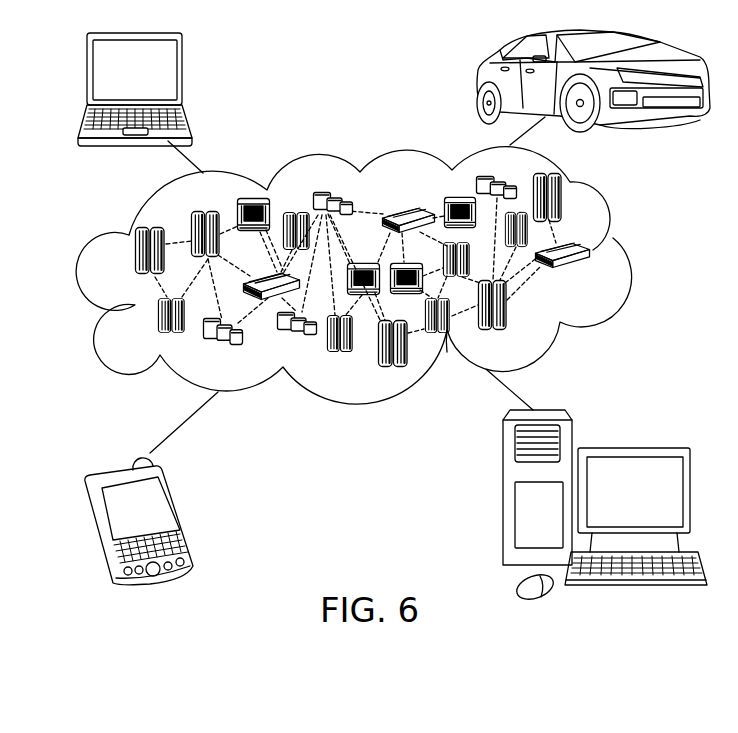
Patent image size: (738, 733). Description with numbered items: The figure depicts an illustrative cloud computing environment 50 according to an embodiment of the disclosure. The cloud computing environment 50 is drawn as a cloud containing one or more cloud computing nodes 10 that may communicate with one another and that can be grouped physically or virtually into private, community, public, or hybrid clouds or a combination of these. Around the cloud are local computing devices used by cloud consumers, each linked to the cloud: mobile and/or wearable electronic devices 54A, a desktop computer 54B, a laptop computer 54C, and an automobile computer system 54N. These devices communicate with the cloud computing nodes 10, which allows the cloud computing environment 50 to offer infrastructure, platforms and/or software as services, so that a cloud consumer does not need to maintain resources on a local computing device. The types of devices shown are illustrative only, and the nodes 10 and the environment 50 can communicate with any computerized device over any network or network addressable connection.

The cloud computing node 10 is at (593, 275).
The cloud computing environment 50 is at (631, 250).
The mobile and/or wearable electronic devices 54A is at (181, 511).
The desktop computer 54B is at (632, 448).
The laptop computer 54C is at (183, 70).
The automobile computer system 54N is at (477, 82).